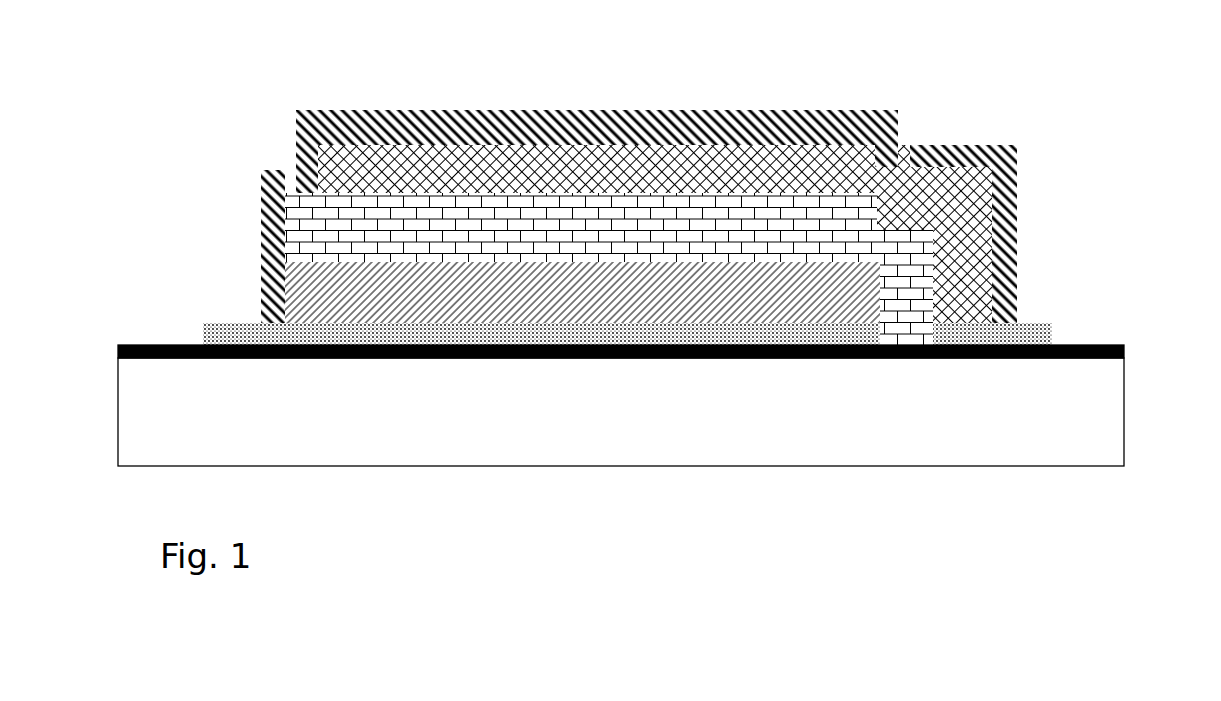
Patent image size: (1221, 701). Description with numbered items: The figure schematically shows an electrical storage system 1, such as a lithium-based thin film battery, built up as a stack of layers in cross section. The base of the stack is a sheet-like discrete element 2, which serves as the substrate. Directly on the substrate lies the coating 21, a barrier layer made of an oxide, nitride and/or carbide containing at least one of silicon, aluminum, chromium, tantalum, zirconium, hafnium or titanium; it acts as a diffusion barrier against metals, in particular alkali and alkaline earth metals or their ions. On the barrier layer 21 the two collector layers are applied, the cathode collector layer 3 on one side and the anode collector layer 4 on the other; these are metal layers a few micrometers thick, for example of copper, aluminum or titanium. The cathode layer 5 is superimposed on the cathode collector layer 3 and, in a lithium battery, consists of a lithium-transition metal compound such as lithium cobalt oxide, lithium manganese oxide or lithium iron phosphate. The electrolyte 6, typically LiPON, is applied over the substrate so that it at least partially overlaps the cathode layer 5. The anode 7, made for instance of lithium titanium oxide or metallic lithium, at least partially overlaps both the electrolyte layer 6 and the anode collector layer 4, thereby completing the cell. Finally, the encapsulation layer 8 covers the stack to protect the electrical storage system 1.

The electrical storage system 1 is at (638, 17).
The sheet-like discrete element 2 is at (621, 473).
The coating 21 is at (665, 306).
The cathode collector layer 3 is at (512, 298).
The anode collector layer 4 is at (1004, 298).
The cathode layer 5 is at (366, 295).
The electrolyte 6 is at (310, 219).
The anode 7 is at (790, 159).
The encapsulation layer 8 is at (988, 211).